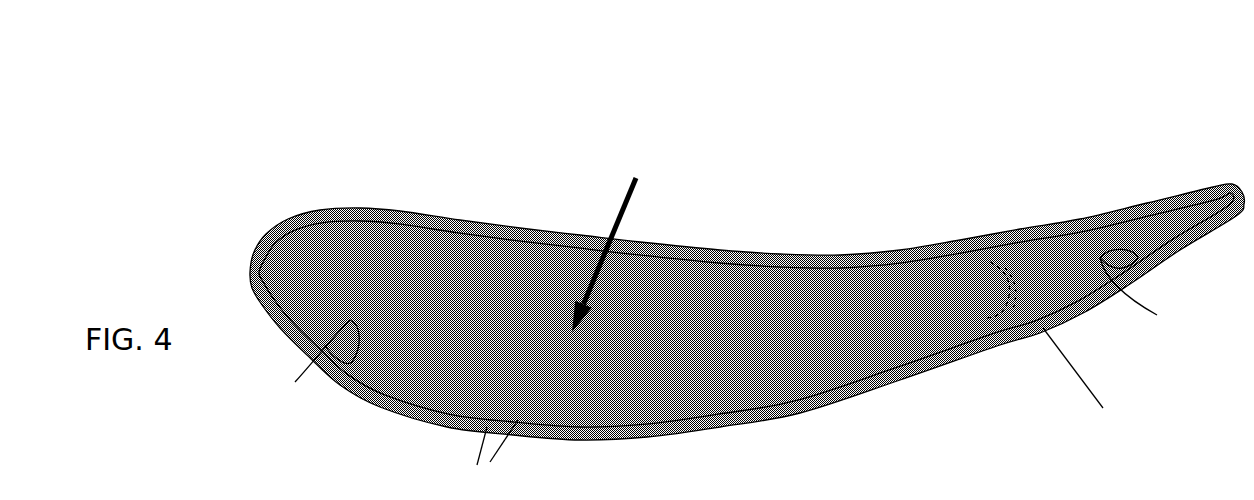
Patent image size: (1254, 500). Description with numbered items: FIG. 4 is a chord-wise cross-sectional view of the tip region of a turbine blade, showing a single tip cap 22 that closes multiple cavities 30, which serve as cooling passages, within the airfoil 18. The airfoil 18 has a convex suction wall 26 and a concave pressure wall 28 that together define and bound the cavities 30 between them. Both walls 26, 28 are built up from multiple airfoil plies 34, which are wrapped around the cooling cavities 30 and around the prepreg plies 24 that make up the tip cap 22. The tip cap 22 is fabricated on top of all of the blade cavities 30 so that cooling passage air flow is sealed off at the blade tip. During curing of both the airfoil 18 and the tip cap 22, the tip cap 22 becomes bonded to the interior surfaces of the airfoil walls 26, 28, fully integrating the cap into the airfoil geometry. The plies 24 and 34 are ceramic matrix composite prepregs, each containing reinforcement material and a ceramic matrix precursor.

The airfoil 18 is at (352, 125).
The tip cap 22 is at (615, 241).
The prepreg plies 24 is at (1067, 267).
The convex (suction) wall 26 is at (790, 251).
The concave (pressure) wall 28 is at (1088, 385).
The cavities (cooling passages) 30 is at (730, 334).
The airfoil plies 34 is at (492, 460).